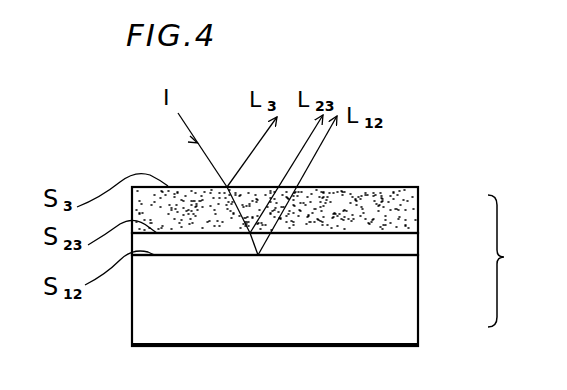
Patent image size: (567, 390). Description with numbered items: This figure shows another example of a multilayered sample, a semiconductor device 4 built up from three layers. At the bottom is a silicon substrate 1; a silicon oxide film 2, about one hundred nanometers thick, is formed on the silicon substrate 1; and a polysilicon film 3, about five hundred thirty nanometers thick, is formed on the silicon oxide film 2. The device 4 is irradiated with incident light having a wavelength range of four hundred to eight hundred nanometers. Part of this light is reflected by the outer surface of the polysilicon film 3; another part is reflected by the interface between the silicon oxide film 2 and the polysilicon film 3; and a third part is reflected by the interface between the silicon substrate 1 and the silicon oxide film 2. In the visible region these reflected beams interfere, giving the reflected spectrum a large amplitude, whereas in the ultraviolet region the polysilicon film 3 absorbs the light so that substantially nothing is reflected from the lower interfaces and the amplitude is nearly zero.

The silicon substrate 1 is at (407, 305).
The silicon oxide film 2 is at (413, 249).
The polysilicon film 3 is at (407, 220).
The semiconductor device 4 is at (503, 261).